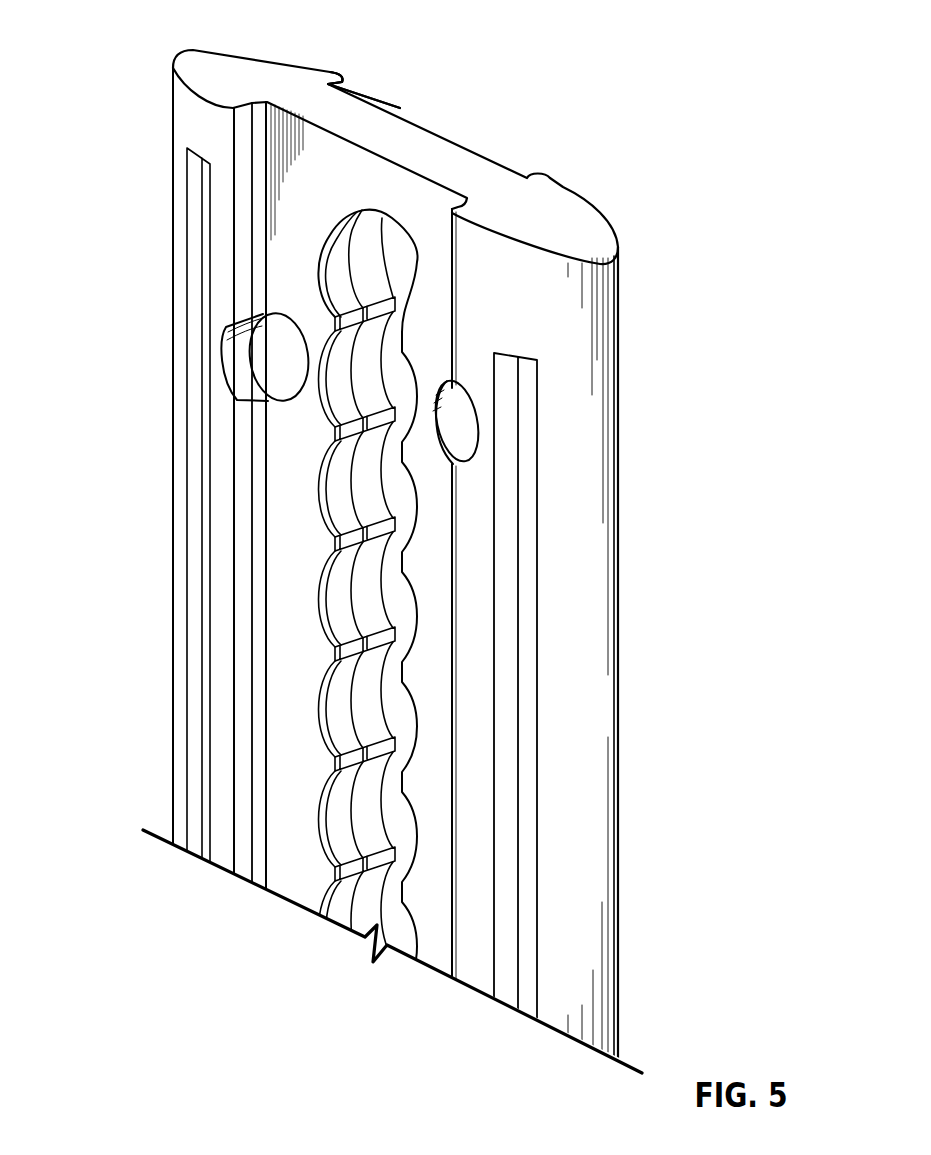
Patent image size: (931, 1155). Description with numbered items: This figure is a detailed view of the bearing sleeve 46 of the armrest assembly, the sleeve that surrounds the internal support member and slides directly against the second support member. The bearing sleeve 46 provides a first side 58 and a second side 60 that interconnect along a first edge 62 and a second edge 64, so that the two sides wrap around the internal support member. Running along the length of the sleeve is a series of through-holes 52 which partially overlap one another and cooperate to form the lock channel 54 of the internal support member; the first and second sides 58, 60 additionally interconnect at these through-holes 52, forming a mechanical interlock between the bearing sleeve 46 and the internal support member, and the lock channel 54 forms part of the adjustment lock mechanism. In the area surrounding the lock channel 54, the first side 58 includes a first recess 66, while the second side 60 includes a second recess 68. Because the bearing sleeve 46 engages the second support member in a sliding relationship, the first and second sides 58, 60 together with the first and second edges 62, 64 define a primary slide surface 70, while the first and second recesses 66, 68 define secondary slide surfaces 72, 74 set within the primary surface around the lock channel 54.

The bearing sleeve 46 is at (568, 590).
The through-holes 52 is at (340, 608).
The lock channel 54 is at (397, 810).
The first side 58 is at (537, 307).
The second side 60 is at (605, 228).
The first edge 62 is at (173, 102).
The second edge 64 is at (608, 480).
The first recess 66 is at (300, 180).
The second recess 68 is at (452, 132).
The primary slide surface 70 is at (478, 738).
The secondary slide surface 72 is at (300, 180).
The secondary slide surface 74 is at (452, 132).